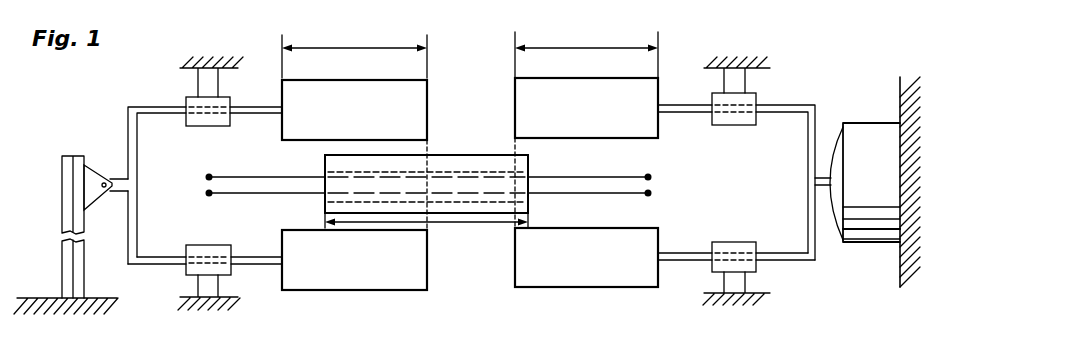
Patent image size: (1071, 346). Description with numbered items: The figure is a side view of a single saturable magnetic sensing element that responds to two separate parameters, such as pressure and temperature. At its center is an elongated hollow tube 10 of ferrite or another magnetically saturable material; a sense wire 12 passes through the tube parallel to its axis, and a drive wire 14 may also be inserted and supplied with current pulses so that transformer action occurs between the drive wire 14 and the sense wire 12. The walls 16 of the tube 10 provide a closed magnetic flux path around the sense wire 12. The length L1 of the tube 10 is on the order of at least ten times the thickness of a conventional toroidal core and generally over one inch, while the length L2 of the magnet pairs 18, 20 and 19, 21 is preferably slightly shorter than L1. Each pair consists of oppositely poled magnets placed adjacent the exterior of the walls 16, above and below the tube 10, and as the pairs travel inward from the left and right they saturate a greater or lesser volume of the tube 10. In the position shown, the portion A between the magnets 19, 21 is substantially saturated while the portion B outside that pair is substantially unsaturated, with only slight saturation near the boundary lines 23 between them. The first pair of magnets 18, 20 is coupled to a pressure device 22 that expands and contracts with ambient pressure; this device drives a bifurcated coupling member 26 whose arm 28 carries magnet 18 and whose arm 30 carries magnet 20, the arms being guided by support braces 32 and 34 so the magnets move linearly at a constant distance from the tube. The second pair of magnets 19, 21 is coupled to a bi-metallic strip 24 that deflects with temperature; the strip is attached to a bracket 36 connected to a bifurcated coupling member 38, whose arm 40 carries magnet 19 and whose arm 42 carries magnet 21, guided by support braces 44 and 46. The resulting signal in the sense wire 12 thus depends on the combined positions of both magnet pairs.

The hollow tube 10 is at (470, 155).
The sense wire 12 is at (625, 175).
The drive wire 14 is at (622, 195).
The walls 16 is at (530, 160).
The magnet 18 is at (643, 114).
The magnet 19 is at (312, 112).
The magnet 20 is at (648, 267).
The magnet 21 is at (312, 266).
The pressure device 22 is at (880, 170).
The boundary lines 23 is at (428, 150).
The bi-metallic strip 24 is at (62, 183).
The bifurcated coupling member 26 is at (820, 177).
The arm 28 is at (783, 105).
The arm 30 is at (792, 261).
The support brace 32 is at (712, 98).
The support brace 34 is at (740, 243).
The bracket 36 is at (104, 169).
The bifurcated coupling member 38 is at (115, 193).
The arm 40 is at (155, 107).
The arm 42 is at (150, 265).
The support brace 44 is at (232, 98).
The support brace 46 is at (190, 245).
The portion A is at (378, 174).
The portion B is at (488, 169).
The elongated dimension of the tube L1 is at (450, 224).
The elongated dimension of the magnet pairs L2 is at (470, 55).